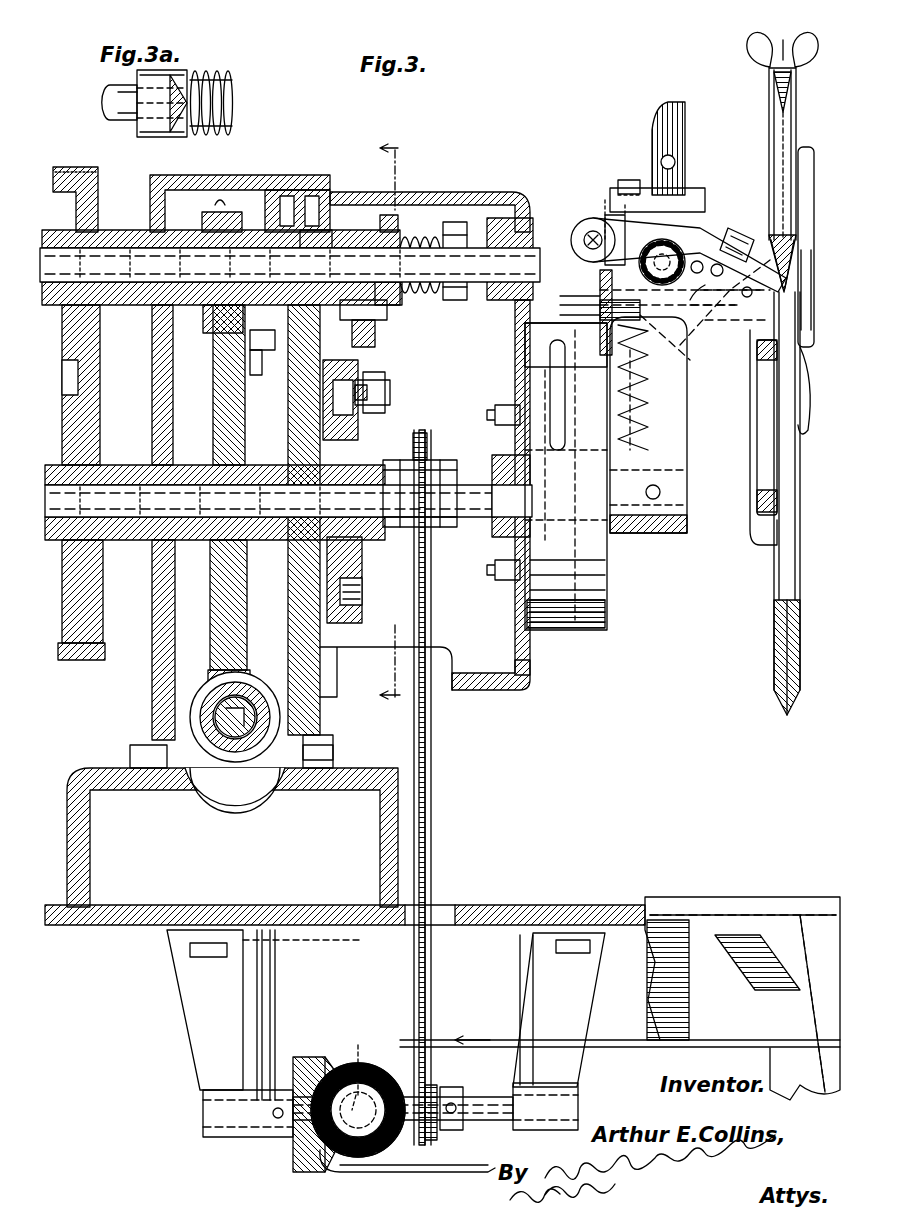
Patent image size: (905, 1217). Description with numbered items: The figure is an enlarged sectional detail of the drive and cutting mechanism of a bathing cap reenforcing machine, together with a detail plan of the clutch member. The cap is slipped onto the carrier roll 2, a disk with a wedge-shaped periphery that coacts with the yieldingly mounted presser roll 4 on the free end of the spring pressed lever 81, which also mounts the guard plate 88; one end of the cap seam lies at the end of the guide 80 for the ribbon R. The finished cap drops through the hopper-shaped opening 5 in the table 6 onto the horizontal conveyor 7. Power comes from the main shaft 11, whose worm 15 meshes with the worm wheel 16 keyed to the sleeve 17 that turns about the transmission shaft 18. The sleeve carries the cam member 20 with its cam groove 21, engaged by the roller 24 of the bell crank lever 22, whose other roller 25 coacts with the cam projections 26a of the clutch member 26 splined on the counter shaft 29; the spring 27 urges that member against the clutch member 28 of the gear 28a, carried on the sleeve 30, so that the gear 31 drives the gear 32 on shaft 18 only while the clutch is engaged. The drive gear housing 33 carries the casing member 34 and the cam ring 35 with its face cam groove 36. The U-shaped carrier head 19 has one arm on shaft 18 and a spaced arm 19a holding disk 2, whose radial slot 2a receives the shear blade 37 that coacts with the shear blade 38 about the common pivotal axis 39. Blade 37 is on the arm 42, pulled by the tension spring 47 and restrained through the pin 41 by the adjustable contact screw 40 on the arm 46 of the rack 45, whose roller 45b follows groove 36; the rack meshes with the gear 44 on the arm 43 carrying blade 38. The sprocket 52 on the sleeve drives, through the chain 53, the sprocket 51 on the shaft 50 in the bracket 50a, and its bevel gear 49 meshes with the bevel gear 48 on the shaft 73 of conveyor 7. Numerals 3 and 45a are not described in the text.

In FIG. 3, the carrier roll 2 is at (779, 628).
In FIG. 3, the radial slot 2a is at (757, 365).
In FIG. 3, the spear point 3 is at (775, 235).
In FIG. 3, the presser roll 4 is at (769, 140).
In FIG. 3, the hopper-shaped opening 5 is at (678, 930).
In FIG. 3, the table 6 is at (565, 905).
In FIG. 3, the transverse horizontal conveyor 7 is at (682, 1040).
In FIG. 3, the main shaft 11 is at (232, 717).
In FIG. 3, the worm 15 is at (205, 697).
In FIG. 3, the worm wheel 16 is at (205, 635).
In FIG. 3, the sleeve 17 is at (262, 475).
In FIG. 3, the transmission shaft 18 is at (278, 520).
In FIG. 3, the carrier head 19 is at (670, 410).
In FIG. 3, the carrier head arm 19a is at (760, 440).
In FIG. 3, the cam member 20 is at (362, 552).
In FIG. 3, the cam groove 21 is at (362, 592).
In FIG. 3, the bell crank lever 22 is at (390, 390).
In FIG. 3, the roller 24 is at (355, 435).
In FIG. 3, the roller 25 is at (387, 312).
In FIG. 3A, the clutch member 26 is at (150, 117).
In FIG. 3, the clutch member 26 is at (350, 228).
In FIG. 3A, the cam projections 26a is at (176, 137).
In FIG. 3, the cam projections 26a is at (390, 214).
In FIG. 3A, the spring 27 is at (215, 87).
In FIG. 3, the spring 27 is at (430, 228).
In FIG. 3, the clutch member 28 is at (290, 190).
In FIG. 3, the gear 28a is at (240, 210).
In FIG. 3A, the counter shaft 29 is at (108, 94).
In FIG. 3, the counter shaft 29 is at (500, 218).
In FIG. 3, the sleeve 30 is at (243, 318).
In FIG. 3, the gear 31 is at (98, 183).
In FIG. 3, the gear 32 is at (100, 412).
In FIG. 3, the drive gear housing 33 is at (320, 662).
In FIG. 3, the casing member 34 is at (510, 690).
In FIG. 3, the cam ring 35 is at (607, 635).
In FIG. 3, the face cam groove 36 is at (607, 590).
In FIG. 3, the shear blade 37 is at (750, 338).
In FIG. 3, the shear blade 38 is at (685, 130).
In FIG. 3, the pivotal axis 39 is at (700, 260).
In FIG. 3, the adjustable contact screw 40 is at (735, 228).
In FIG. 3, the pin 41 is at (700, 290).
In FIG. 3, the arm 42 is at (730, 310).
In FIG. 3, the arm 43 is at (660, 175).
In FIG. 3, the gear 44 is at (640, 330).
In FIG. 3, the rack 45 is at (600, 220).
In FIG. 3, the lever pivot 45a is at (598, 210).
In FIG. 3, the roller 45b is at (606, 300).
In FIG. 3, the arm 46 is at (690, 215).
In FIG. 3, the tension spring 47 is at (602, 285).
In FIG. 3, the bevel gear 48 is at (345, 1060).
In FIG. 3, the bevel gear 49 is at (295, 1155).
In FIG. 3, the shaft 50 is at (485, 1097).
In FIG. 3, the bracket 50a is at (215, 1092).
In FIG. 3, the sprocket 51 is at (437, 1138).
In FIG. 3, the sprocket 52 is at (428, 445).
In FIG. 3, the chain 53 is at (431, 740).
In FIG. 3, the shaft 73 is at (362, 1050).
In FIG. 3, the guide 80 is at (755, 65).
In FIG. 3, the spring pressed lever 81 is at (806, 150).
In FIG. 3, the guard plate 88 is at (808, 425).
In FIG. 3, the ribbon R is at (783, 38).